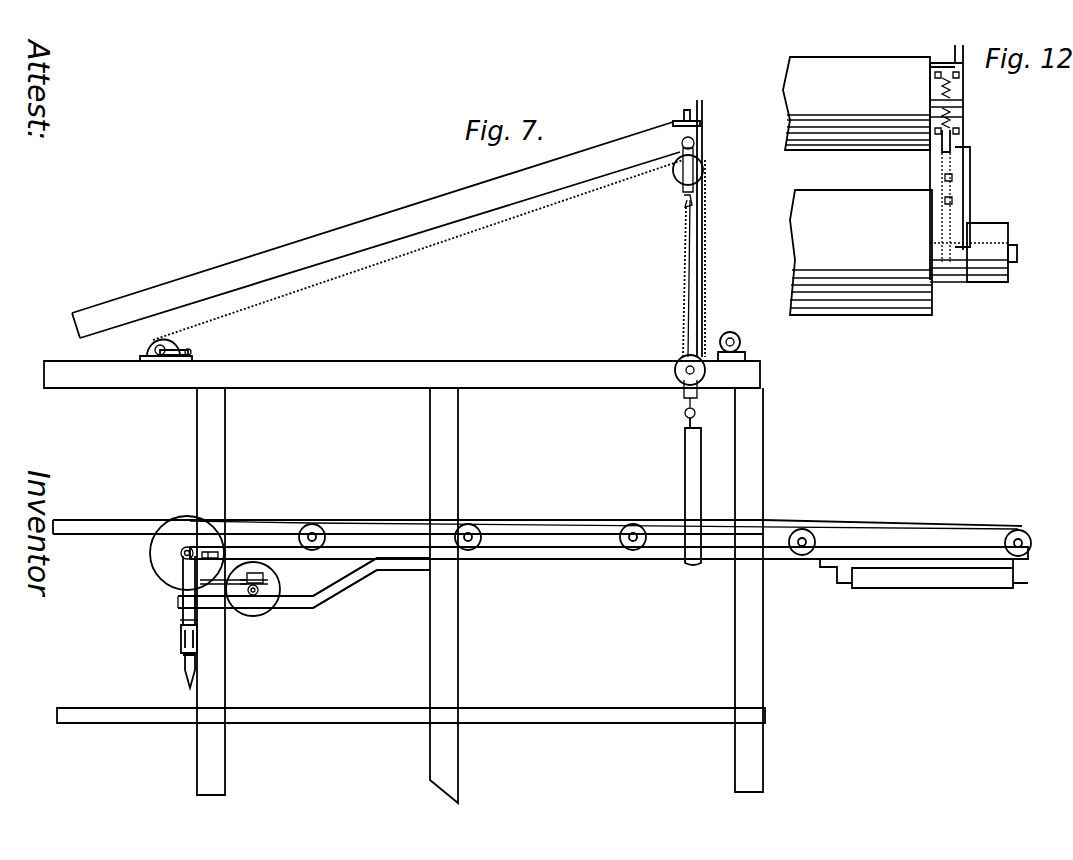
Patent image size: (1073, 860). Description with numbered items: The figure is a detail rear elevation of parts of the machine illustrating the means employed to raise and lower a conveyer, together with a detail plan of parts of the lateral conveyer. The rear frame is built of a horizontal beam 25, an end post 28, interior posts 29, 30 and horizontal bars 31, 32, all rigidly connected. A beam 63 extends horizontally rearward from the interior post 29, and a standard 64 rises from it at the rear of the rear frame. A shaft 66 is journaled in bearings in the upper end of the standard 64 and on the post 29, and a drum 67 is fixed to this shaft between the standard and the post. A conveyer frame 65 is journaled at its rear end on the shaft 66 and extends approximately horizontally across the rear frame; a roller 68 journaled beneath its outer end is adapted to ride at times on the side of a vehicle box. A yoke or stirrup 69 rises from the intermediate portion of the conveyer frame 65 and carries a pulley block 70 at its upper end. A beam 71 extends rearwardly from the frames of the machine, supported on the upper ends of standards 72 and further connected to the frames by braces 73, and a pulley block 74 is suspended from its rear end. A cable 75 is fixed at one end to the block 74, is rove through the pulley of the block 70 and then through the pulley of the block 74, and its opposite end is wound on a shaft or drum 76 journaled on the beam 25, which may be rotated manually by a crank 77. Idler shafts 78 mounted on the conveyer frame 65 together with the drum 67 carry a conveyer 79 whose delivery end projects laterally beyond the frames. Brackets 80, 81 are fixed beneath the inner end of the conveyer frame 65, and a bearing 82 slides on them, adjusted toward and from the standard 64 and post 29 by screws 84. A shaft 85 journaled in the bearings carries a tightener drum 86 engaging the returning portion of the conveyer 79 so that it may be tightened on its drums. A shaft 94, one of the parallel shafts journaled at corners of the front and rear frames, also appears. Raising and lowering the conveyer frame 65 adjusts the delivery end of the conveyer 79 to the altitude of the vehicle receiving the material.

In FIG. 7, the horizontal beam 25 is at (402, 374).
In FIG. 7, the end post 28 is at (749, 590).
In FIG. 7, the interior post 29 is at (211, 591).
In FIG. 7, the interior post 30 is at (444, 595).
In FIG. 7, the horizontal bar 31 is at (108, 528).
In FIG. 7, the horizontal bar 32 is at (325, 716).
In FIG. 7, the beam 63 is at (181, 640).
In FIG. 7, the standard 64 is at (183, 612).
In FIG. 12, the standard 64 is at (1003, 236).
In FIG. 7, the conveyer frame 65 is at (556, 559).
In FIG. 12, the conveyer frame 65 is at (955, 50).
In FIG. 7, the shaft 66 is at (183, 562).
In FIG. 12, the shaft 66 is at (1017, 254).
In FIG. 7, the drum 67 is at (160, 551).
In FIG. 12, the drum 67 is at (861, 252).
In FIG. 7, the roller 68 is at (882, 580).
In FIG. 7, the yoke or stirrup 69 is at (685, 470).
In FIG. 7, the pulley block 70 is at (684, 388).
In FIG. 7, the beam 71 is at (702, 114).
In FIG. 7, the standard 72 is at (693, 250).
In FIG. 7, the brace 73 is at (376, 230).
In FIG. 7, the pulley block 74 is at (704, 168).
In FIG. 7, the cable 75 is at (352, 274).
In FIG. 7, the shaft or drum 76 is at (150, 348).
In FIG. 7, the crank 77 is at (192, 353).
In FIG. 7, the idler shaft 78 is at (316, 528).
In FIG. 7, the conveyer 79 is at (555, 524).
In FIG. 7, the bracket 80 is at (316, 600).
In FIG. 12, the bracket 80 is at (960, 148).
In FIG. 7, the bracket 81 is at (358, 578).
In FIG. 7, the bearing 82 is at (258, 596).
In FIG. 12, the bearing 82 is at (960, 106).
In FIG. 7, the screw 84 is at (266, 578).
In FIG. 12, the screw 84 is at (962, 124).
In FIG. 7, the shaft 85 is at (251, 598).
In FIG. 7, the tightener drum 86 is at (270, 588).
In FIG. 12, the tightener drum 86 is at (856, 103).
In FIG. 7, the shaft 94 is at (741, 342).